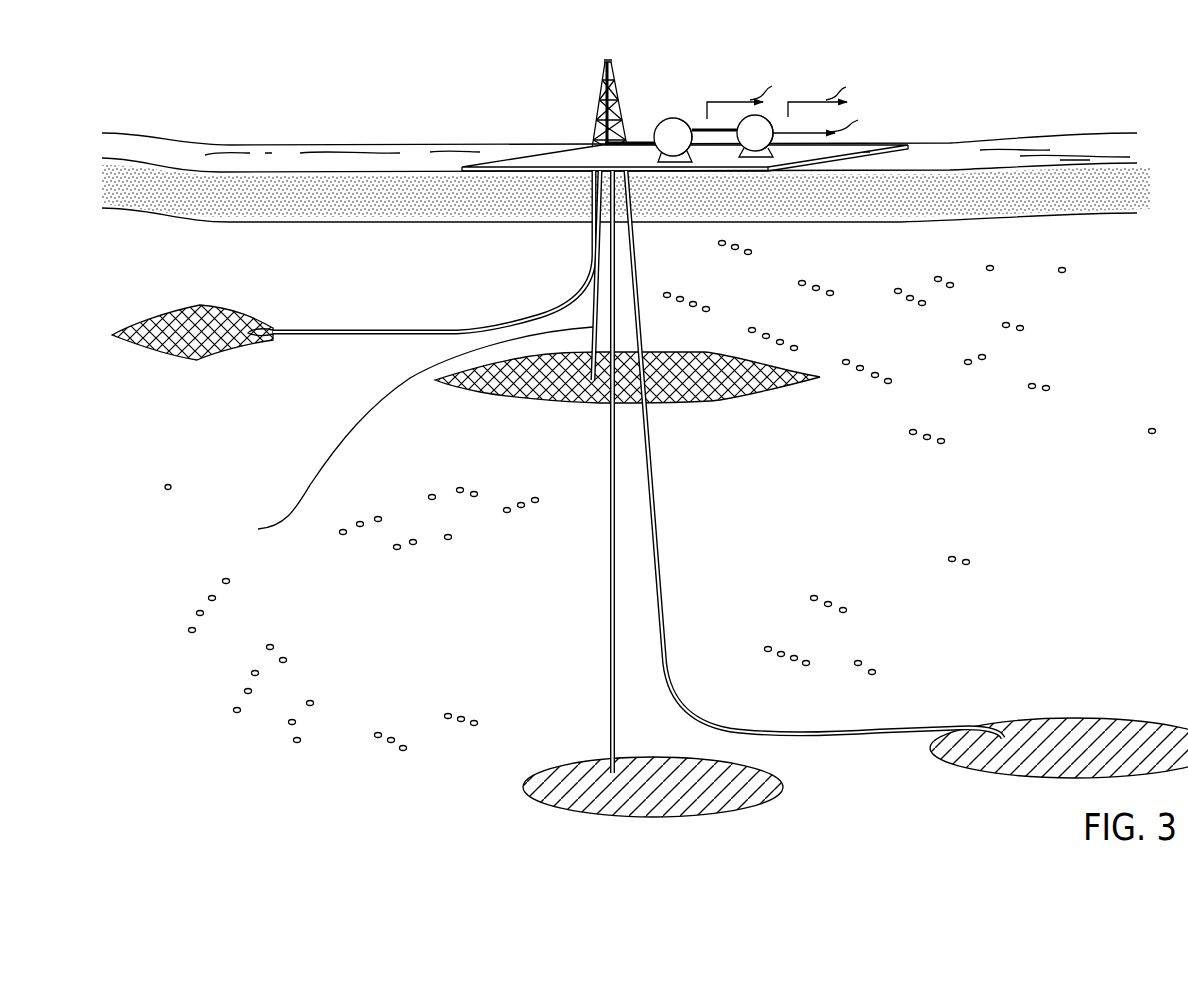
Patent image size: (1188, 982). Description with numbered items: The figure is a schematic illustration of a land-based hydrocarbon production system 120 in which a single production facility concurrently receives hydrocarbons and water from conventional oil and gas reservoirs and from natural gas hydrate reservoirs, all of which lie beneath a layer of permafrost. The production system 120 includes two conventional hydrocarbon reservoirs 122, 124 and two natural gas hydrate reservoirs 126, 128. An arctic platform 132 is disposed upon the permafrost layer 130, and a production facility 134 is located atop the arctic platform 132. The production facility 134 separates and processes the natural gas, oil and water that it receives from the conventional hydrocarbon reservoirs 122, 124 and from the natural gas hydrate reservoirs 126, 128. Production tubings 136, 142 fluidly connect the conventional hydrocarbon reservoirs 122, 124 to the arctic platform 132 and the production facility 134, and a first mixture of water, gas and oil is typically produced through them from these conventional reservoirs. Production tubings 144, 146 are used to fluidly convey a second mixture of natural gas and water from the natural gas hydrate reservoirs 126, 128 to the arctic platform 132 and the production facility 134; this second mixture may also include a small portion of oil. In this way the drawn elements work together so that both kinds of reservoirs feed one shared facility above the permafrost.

The hydrocarbon production system 120 is at (262, 76).
The conventional hydrocarbon reservoir 122 is at (525, 787).
The conventional hydrocarbon reservoir 124 is at (1065, 727).
The natural gas hydrate reservoir 126 is at (498, 408).
The natural gas hydrate reservoir 128 is at (183, 362).
The permafrost layer 130 is at (967, 188).
The arctic platform 132 is at (555, 163).
The production facility 134 is at (720, 73).
The production tubing 136 is at (608, 634).
The production tubing 142 is at (655, 523).
The production tubing 144 is at (404, 435).
The production tubing 146 is at (460, 326).